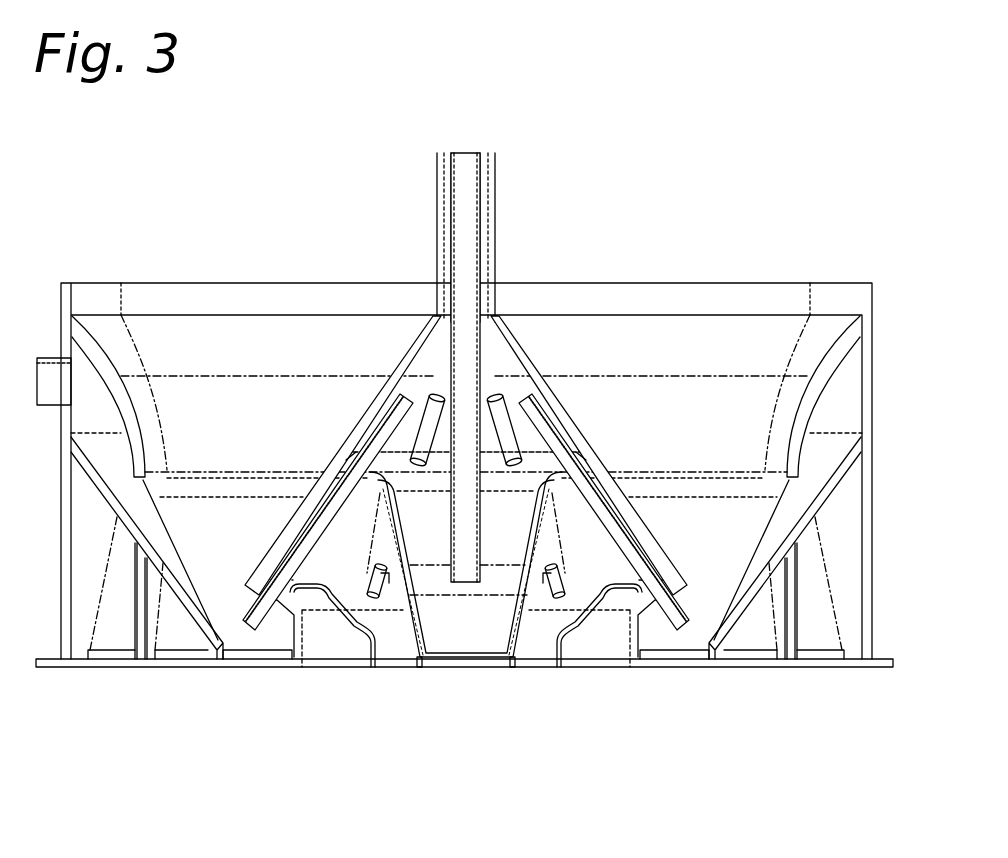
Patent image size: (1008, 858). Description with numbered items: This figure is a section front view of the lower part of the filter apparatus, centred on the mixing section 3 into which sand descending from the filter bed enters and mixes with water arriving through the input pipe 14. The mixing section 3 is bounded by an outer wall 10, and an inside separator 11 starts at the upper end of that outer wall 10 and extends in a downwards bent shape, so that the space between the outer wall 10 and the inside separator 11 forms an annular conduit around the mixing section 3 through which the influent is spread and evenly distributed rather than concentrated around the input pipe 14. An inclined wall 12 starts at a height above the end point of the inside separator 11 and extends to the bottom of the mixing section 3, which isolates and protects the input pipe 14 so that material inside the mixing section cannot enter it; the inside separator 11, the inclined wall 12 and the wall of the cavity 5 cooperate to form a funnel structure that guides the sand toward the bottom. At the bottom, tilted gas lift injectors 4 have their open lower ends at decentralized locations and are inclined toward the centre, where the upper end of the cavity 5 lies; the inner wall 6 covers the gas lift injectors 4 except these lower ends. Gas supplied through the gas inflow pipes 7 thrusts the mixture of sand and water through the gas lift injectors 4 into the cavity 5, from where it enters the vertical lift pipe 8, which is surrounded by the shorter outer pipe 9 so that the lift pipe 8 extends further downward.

The mixing section 3 is at (755, 270).
The gas lift injectors 4 is at (670, 618).
The cavity 5 is at (493, 372).
The inner wall 6 is at (570, 428).
The gas inflow pipes 7 is at (562, 637).
The lift pipe 8 is at (463, 227).
The outer pipe 9 is at (485, 178).
The outer wall 10 is at (862, 418).
The inside separator 11 is at (823, 367).
The inclined wall 12 is at (825, 495).
The input pipe 14 is at (45, 377).